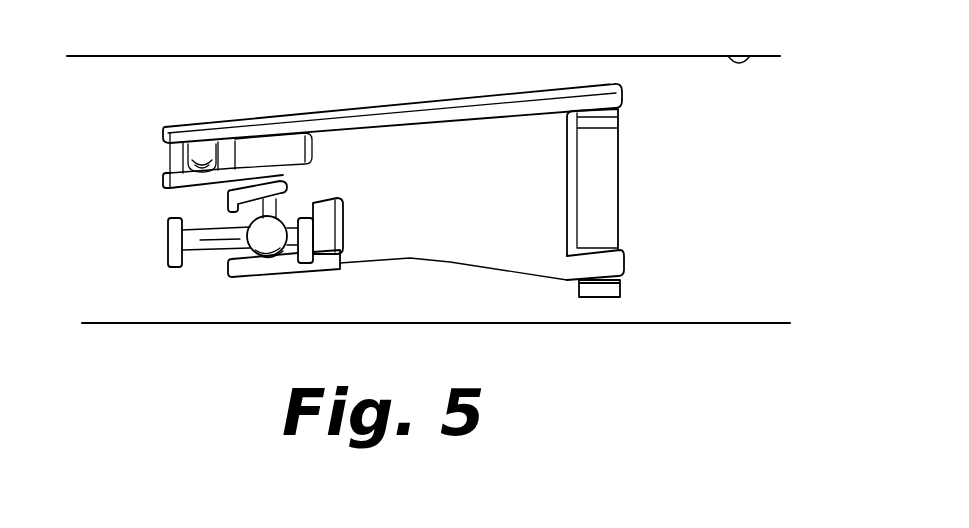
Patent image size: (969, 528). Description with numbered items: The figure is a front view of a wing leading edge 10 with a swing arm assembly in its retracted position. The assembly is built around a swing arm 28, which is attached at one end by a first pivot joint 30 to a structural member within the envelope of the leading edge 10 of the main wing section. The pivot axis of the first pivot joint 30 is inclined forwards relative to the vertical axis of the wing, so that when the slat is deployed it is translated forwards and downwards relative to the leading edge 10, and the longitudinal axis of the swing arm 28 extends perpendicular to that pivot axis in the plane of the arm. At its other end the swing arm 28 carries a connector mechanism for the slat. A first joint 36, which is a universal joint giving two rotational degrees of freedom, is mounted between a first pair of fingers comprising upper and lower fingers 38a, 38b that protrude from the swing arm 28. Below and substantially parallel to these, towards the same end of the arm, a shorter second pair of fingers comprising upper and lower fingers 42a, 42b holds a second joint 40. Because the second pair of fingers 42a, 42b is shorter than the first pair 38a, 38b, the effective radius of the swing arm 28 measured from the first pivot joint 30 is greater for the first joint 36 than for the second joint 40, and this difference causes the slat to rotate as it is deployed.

The leading edge 10 is at (755, 53).
The swing arm 28 is at (448, 247).
The first pivot joint 30 is at (600, 162).
The first joint 36 is at (337, 91).
The upper finger 38a is at (163, 128).
The lower finger 38b is at (166, 181).
The second joint 40 is at (205, 263).
The upper finger 42a is at (228, 198).
The lower finger 42b is at (288, 268).